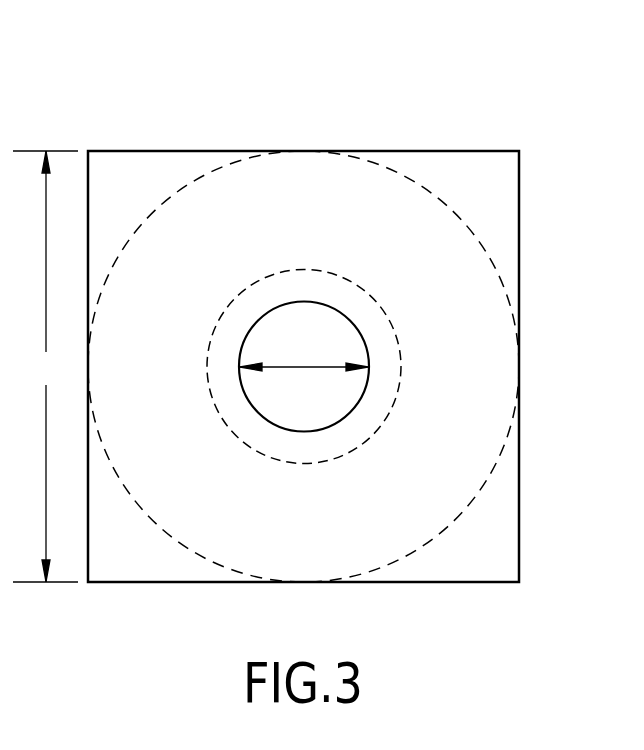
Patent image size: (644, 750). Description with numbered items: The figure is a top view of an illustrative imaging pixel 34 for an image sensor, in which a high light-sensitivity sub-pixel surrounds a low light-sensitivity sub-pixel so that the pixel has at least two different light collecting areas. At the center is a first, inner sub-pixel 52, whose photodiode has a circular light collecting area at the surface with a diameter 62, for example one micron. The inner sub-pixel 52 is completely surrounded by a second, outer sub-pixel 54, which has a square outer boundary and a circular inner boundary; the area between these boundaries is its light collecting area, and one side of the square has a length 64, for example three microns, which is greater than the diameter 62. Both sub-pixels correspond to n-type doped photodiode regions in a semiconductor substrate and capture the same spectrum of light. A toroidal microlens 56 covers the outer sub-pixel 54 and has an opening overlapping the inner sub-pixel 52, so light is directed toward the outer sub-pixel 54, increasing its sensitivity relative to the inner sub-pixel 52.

The imaging pixel 34 is at (450, 124).
The inner sub-pixel 52 is at (338, 312).
The outer sub-pixel 54 is at (500, 203).
The toroidal microlens 56 is at (214, 170).
The diameter 62 is at (304, 368).
The length 64 is at (45, 366).